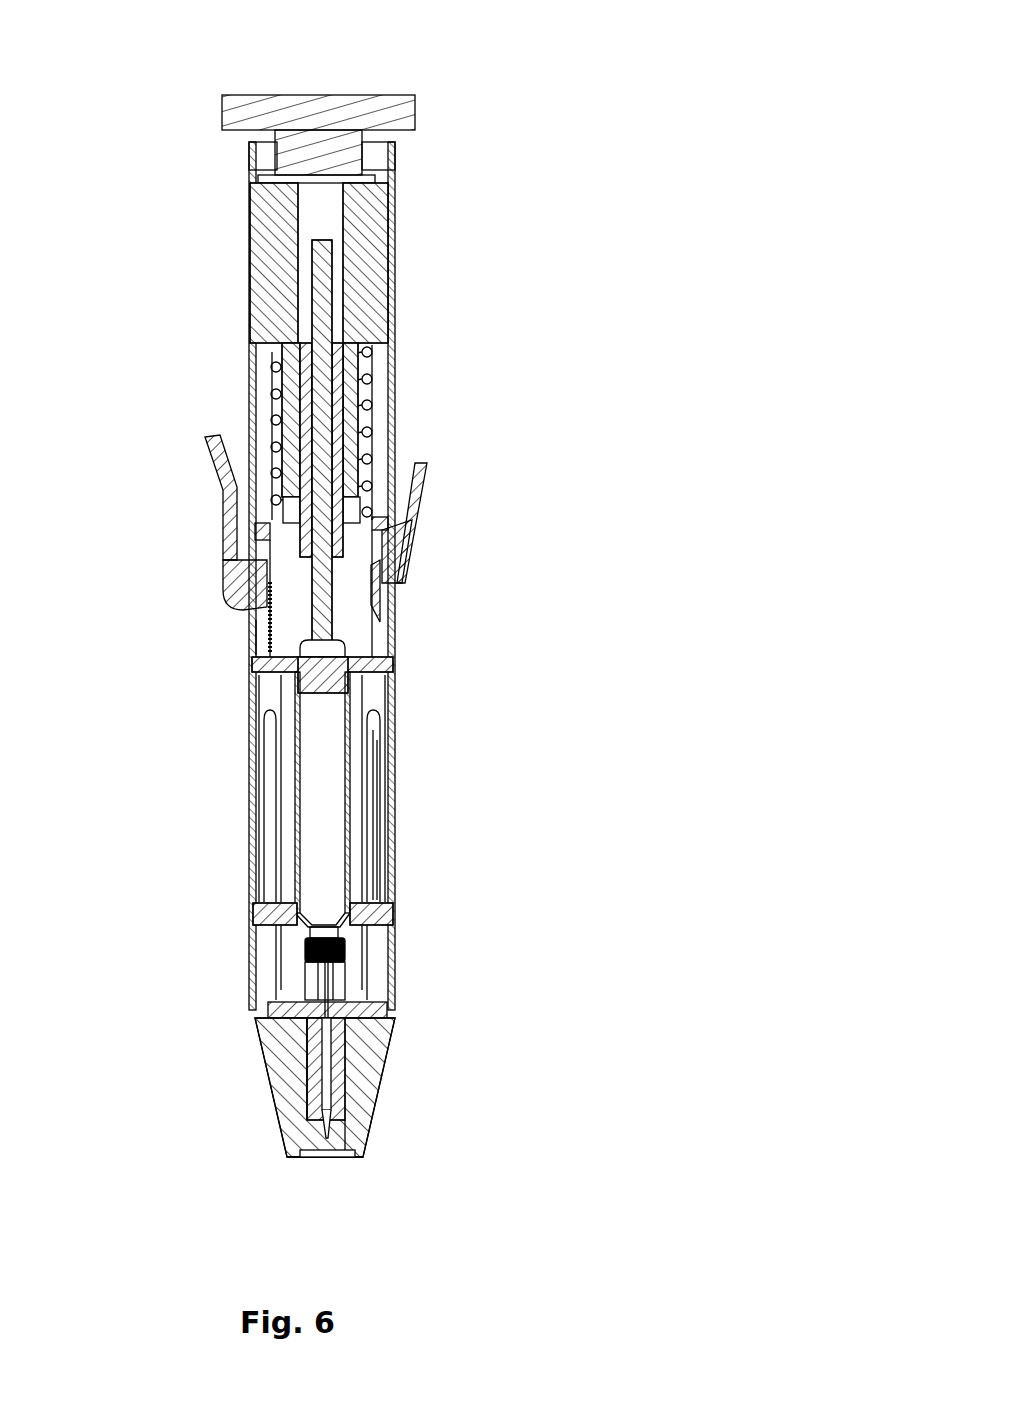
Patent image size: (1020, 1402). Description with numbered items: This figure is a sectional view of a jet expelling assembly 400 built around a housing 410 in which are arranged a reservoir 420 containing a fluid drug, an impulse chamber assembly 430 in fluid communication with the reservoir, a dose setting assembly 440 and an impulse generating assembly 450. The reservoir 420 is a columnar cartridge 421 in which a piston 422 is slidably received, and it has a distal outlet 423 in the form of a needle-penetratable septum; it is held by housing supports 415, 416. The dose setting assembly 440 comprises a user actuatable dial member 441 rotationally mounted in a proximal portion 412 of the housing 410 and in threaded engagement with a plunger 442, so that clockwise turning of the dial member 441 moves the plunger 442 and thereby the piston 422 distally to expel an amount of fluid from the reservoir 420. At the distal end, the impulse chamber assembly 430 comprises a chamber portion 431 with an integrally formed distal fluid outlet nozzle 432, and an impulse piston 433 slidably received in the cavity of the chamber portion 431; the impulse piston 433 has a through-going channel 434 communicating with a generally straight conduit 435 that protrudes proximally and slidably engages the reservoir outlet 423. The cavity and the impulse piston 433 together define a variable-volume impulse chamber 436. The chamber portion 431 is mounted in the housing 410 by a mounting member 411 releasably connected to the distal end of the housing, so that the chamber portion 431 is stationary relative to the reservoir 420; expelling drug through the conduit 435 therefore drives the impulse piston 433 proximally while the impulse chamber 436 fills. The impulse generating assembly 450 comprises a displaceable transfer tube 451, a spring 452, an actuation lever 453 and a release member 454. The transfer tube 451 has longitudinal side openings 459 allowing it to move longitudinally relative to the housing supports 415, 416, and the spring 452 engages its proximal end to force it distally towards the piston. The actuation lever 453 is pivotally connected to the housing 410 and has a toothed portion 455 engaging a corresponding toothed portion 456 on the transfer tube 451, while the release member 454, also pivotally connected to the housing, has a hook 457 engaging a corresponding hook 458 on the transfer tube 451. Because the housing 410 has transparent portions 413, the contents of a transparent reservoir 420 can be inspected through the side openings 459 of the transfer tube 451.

The jet expelling assembly 400 is at (633, 100).
The housing 410 is at (362, 580).
The mounting member 411 is at (270, 1149).
The proximal portion of the housing 412 is at (360, 349).
The transparent portions 413 is at (425, 815).
The housing support 415 is at (361, 656).
The housing support 416 is at (365, 926).
The reservoir 420 is at (365, 823).
The columnar cartridge 421 is at (202, 837).
The piston 422 is at (244, 691).
The distal outlet 423 is at (244, 967).
The impulse chamber assembly 430 is at (358, 1067).
The chamber portion 431 is at (384, 1085).
The distal fluid outlet nozzle 432 is at (381, 1167).
The impulse piston 433 is at (387, 1069).
The through-going channel 434 is at (241, 1069).
The conduit 435 is at (237, 1048).
The impulse chamber 436 is at (290, 1188).
The dose setting assembly 440 is at (390, 273).
The dial member 441 is at (356, 134).
The plunger 442 is at (387, 448).
The impulse generating assembly 450 is at (246, 630).
The transfer tube 451 is at (427, 837).
The spring 452 is at (381, 432).
The actuation lever 453 is at (162, 497).
The release member 454 is at (458, 523).
The toothed portion 455 is at (262, 598).
The toothed portion 456 is at (257, 618).
The hook 457 is at (442, 551).
The hook 458 is at (435, 595).
The longitudinal side openings 459 is at (431, 820).